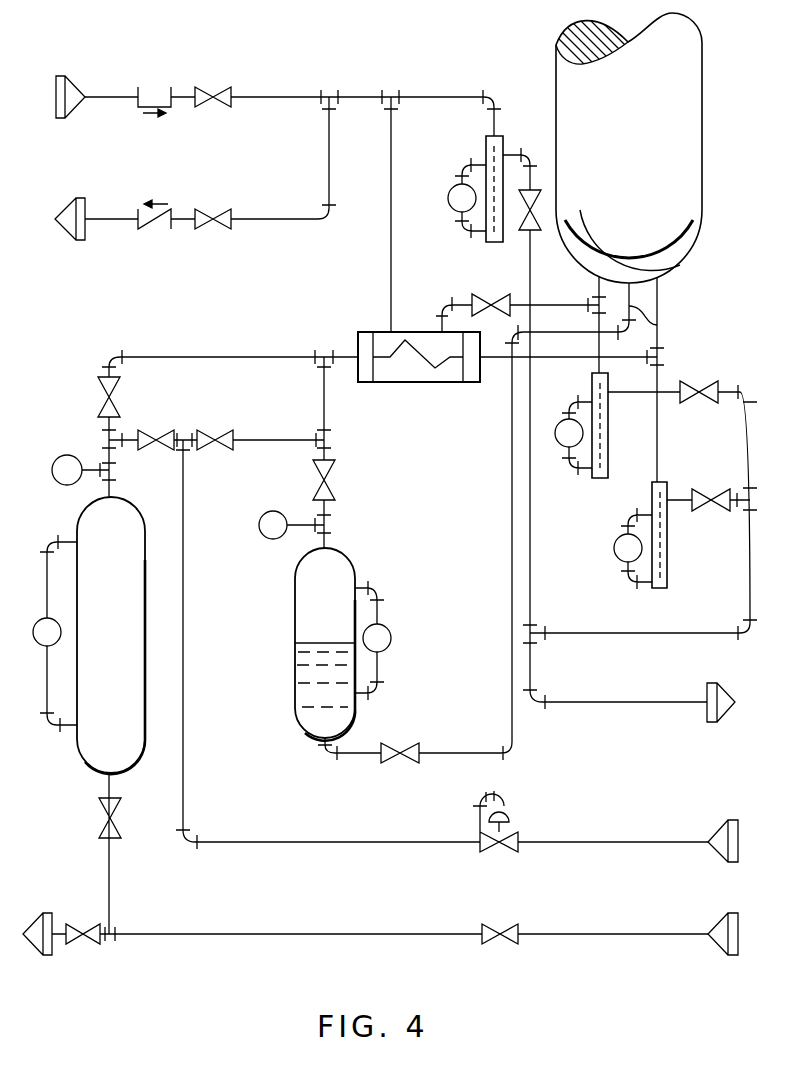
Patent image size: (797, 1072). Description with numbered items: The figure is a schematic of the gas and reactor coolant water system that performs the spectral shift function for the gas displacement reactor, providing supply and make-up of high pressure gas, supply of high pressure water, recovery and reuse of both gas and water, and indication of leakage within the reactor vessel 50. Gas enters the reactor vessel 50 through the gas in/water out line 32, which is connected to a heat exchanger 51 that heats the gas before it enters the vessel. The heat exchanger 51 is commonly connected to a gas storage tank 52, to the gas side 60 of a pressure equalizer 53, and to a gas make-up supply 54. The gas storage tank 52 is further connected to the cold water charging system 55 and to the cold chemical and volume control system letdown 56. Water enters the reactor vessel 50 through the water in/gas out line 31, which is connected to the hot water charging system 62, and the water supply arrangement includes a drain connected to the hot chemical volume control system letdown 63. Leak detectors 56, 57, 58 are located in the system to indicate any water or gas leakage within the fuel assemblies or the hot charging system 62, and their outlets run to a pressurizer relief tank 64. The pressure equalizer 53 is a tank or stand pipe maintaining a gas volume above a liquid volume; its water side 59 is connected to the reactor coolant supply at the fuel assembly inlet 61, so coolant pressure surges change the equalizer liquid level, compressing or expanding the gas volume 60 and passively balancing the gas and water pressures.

The reactor vessel 50 is at (688, 250).
The water in/gas out line 31 is at (599, 290).
The gas in/water out line 32 is at (657, 292).
The fuel assembly inlet 61 is at (657, 325).
The heat exchanger 51 is at (422, 382).
The gas storage tank 52 is at (145, 655).
The pressure equalizer 53 is at (294, 618).
The gas make-up supply 54 is at (725, 822).
The cold water charging system 55 is at (725, 913).
The cold chemical and volume control system letdown 56 is at (494, 244).
The leak detector 57 is at (603, 478).
The leak detector 58 is at (668, 565).
The water side of equalizer 59 is at (305, 715).
The gas side of pressure equalizer 60 is at (352, 563).
The hot water charging system 62 is at (66, 118).
The hot chemical volume control system letdown 63 is at (85, 240).
The pressurizer relief tank 64 is at (712, 683).